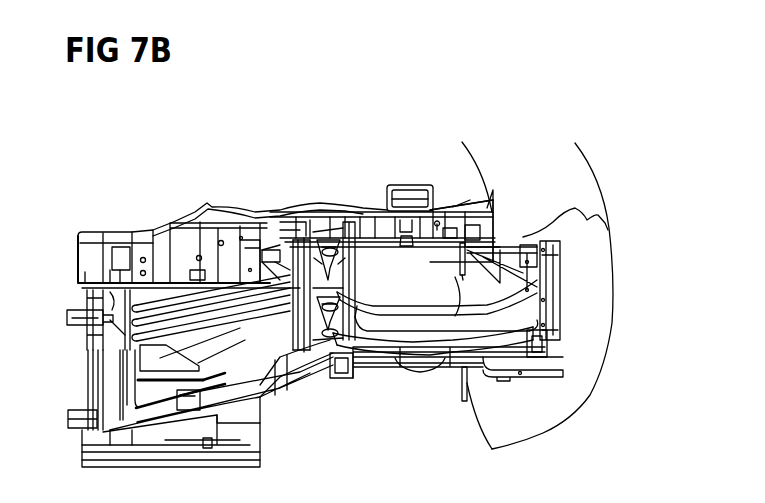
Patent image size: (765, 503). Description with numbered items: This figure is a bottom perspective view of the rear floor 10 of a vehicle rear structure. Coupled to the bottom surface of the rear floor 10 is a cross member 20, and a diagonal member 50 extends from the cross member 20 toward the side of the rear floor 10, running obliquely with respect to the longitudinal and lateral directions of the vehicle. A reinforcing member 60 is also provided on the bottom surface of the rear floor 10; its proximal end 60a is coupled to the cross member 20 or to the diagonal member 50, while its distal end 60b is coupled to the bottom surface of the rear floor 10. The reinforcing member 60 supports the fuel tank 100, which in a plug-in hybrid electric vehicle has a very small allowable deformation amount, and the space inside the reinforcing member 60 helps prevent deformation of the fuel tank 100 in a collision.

The rear floor 10 is at (340, 372).
The cross member 20 is at (550, 375).
The diagonal member 50 is at (470, 243).
The reinforcing member 60 is at (360, 240).
The proximal end 60a is at (545, 283).
The distal end 60b is at (323, 240).
The fuel tank 100 is at (448, 367).